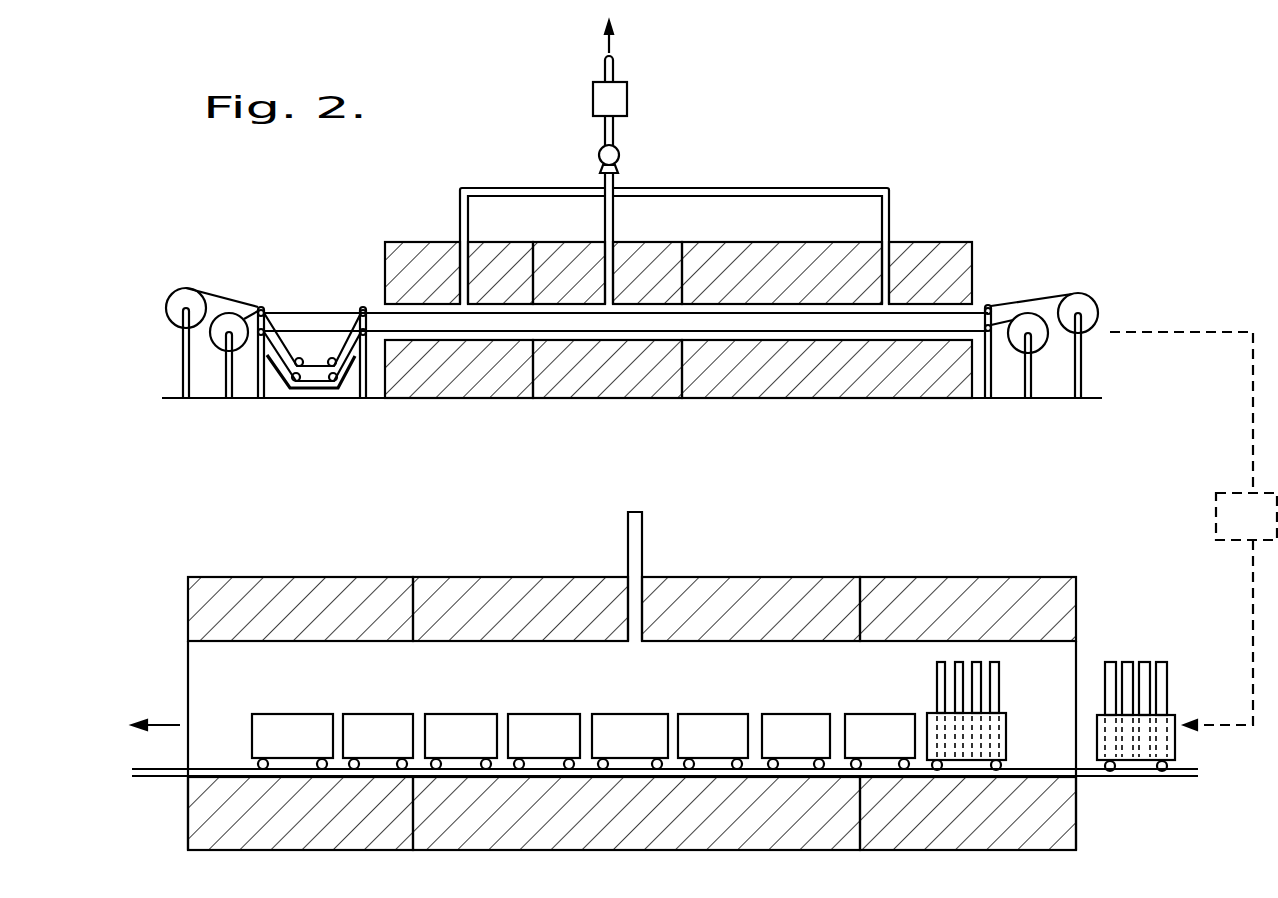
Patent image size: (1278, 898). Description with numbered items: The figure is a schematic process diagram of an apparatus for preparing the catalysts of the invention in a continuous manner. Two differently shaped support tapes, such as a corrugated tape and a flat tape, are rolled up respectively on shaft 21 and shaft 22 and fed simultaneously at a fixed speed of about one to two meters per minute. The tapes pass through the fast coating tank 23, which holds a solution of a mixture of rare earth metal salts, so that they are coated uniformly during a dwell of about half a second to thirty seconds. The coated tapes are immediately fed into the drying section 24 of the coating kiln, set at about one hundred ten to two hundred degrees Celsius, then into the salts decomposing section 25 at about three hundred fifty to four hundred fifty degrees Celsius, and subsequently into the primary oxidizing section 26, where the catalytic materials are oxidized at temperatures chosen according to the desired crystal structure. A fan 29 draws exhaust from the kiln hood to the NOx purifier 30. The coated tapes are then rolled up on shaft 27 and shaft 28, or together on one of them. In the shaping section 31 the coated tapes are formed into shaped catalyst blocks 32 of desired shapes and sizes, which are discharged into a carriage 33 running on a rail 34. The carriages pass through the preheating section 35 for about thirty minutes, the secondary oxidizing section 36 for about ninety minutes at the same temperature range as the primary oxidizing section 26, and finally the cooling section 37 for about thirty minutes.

The shaft 21 is at (172, 318).
The shaft 22 is at (219, 340).
The fast coating tank 23 is at (310, 389).
The drying section of the coating kiln 24 is at (456, 380).
The salts decomposing section of the coating kiln 25 is at (597, 380).
The primary oxidizing section of the coating kiln 26 is at (816, 385).
The shaft 27 is at (1022, 343).
The shaft 28 is at (1088, 327).
The fan 29 is at (616, 157).
The NOx purifier 30 is at (620, 97).
The shaping section 31 is at (1264, 528).
The shaped catalyst blocks 32 is at (992, 684).
The carriage 33 is at (857, 720).
The rail 34 is at (1198, 774).
The preheating section 35 is at (980, 840).
The secondary oxidizing section 36 is at (605, 838).
The cooling section 37 is at (298, 838).